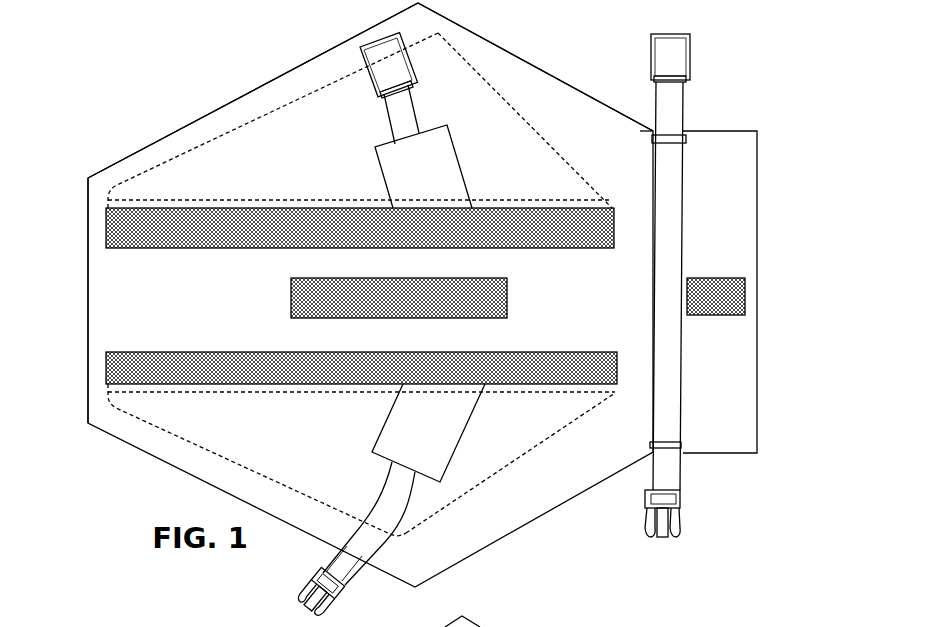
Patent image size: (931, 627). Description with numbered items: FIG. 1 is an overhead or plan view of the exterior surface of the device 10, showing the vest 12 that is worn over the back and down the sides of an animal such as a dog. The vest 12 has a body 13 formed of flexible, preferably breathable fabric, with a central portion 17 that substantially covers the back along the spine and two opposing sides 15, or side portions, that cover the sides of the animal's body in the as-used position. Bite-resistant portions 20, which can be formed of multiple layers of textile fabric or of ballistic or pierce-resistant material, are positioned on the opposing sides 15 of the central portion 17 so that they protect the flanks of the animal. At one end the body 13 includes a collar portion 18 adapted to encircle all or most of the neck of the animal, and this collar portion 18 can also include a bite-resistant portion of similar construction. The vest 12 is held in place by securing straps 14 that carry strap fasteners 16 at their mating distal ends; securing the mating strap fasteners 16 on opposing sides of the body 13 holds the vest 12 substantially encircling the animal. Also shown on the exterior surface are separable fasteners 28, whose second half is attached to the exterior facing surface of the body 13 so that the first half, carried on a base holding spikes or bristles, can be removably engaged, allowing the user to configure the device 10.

The device 10 is at (128, 68).
The vest 12 is at (232, 103).
The body 13 is at (573, 120).
The securing straps 14 is at (408, 128).
The opposing sides 15 is at (323, 148).
The strap fasteners 16 is at (665, 62).
The central portion 17 is at (120, 304).
The collar portion 18 is at (716, 160).
The bite-resistant portions 20 is at (162, 183).
The separable fastener 28 is at (215, 237).